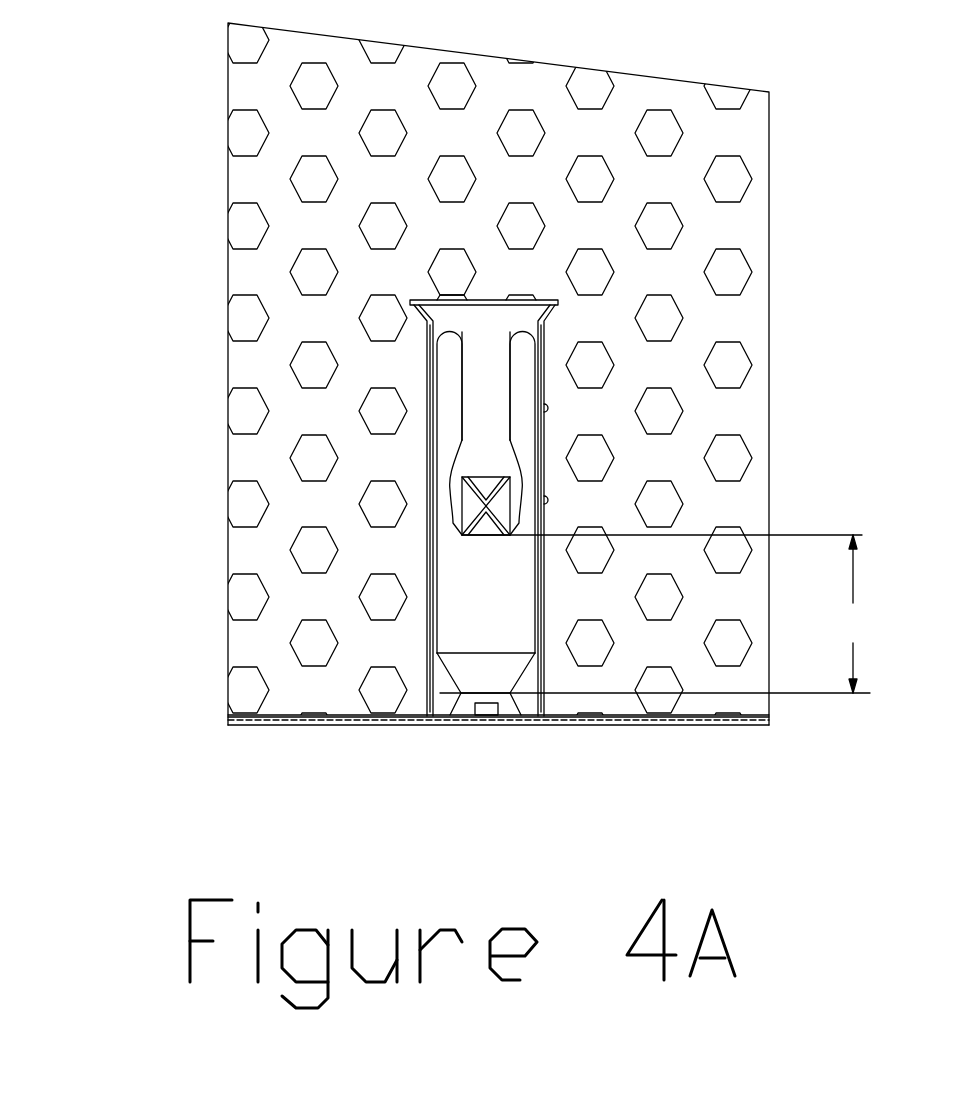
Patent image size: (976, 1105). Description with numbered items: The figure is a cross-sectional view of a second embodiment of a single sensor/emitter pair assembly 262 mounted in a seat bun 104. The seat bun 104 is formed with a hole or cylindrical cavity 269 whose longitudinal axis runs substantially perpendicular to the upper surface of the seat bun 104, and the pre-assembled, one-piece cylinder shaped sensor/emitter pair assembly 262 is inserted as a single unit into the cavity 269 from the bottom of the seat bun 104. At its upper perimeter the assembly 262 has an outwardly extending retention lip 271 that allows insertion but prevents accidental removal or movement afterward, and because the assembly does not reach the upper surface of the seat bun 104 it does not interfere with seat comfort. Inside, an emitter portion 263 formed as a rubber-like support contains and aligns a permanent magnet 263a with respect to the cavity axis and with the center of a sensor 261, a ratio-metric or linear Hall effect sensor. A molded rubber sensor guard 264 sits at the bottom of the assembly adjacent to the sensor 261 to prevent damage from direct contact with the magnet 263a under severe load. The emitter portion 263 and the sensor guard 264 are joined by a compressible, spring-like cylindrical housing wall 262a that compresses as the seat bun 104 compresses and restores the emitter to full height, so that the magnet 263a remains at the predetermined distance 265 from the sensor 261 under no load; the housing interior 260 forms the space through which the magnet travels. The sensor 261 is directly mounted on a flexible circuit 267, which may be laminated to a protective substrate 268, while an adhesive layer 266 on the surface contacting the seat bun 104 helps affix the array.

The seat bun 104 is at (710, 410).
The insert body cavity 260 is at (432, 583).
The sensor 261 is at (485, 714).
The sensor/emitter pair assembly 262 is at (427, 370).
The cylindrical housing wall 262a is at (537, 462).
The emitter portion 263 is at (480, 432).
The permanent magnet 263a is at (483, 502).
The sensor guard 264 is at (445, 693).
The predetermined distance 265 is at (656, 614).
The adhesive layer 266 is at (393, 720).
The flexible circuit 267 is at (285, 725).
The protective substrate 268 is at (575, 727).
The cylindrical cavity 269 is at (427, 407).
The retention lip 271 is at (410, 303).